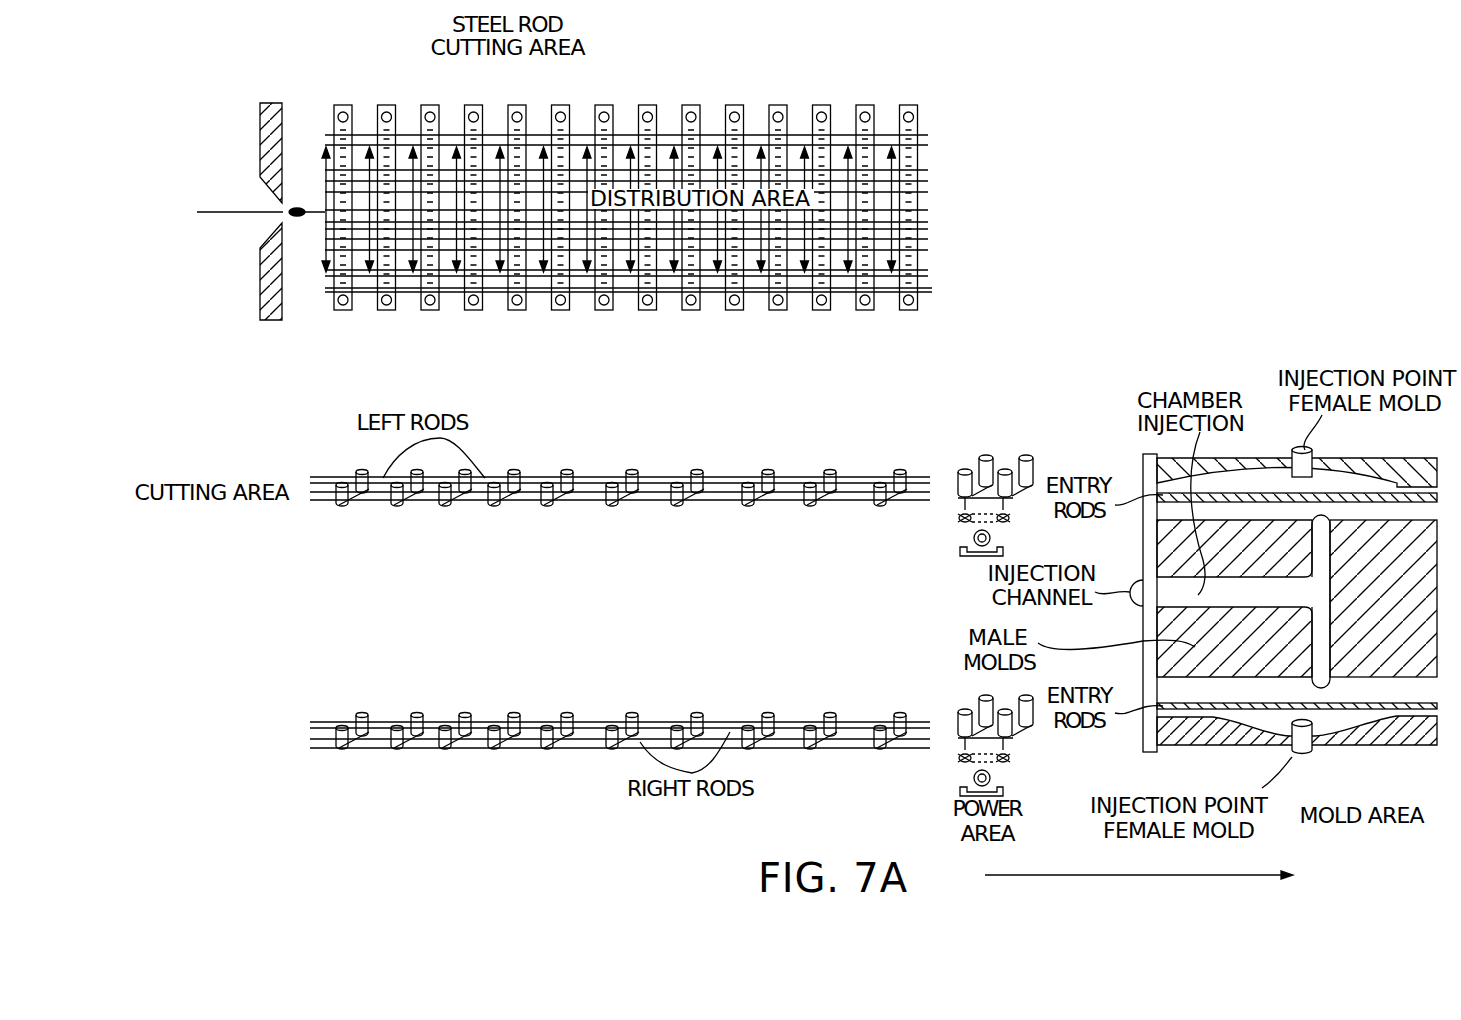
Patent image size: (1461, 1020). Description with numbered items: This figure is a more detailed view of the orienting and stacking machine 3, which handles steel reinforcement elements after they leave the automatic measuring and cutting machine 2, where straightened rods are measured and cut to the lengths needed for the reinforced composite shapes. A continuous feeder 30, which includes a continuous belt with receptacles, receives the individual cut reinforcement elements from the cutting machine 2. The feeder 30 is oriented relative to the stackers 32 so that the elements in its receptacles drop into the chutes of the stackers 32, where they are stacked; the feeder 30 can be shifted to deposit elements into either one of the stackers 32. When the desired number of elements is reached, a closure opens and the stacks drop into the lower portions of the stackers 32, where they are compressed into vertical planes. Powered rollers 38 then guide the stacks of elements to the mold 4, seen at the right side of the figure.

The measuring and cutting machine 2 is at (310, 90).
The orienting and stacking machine 3 is at (980, 92).
The continuous feeder 30 is at (947, 280).
The stackers 32 is at (333, 575).
The powered rollers 38 is at (957, 500).
The mold 4 is at (1102, 752).